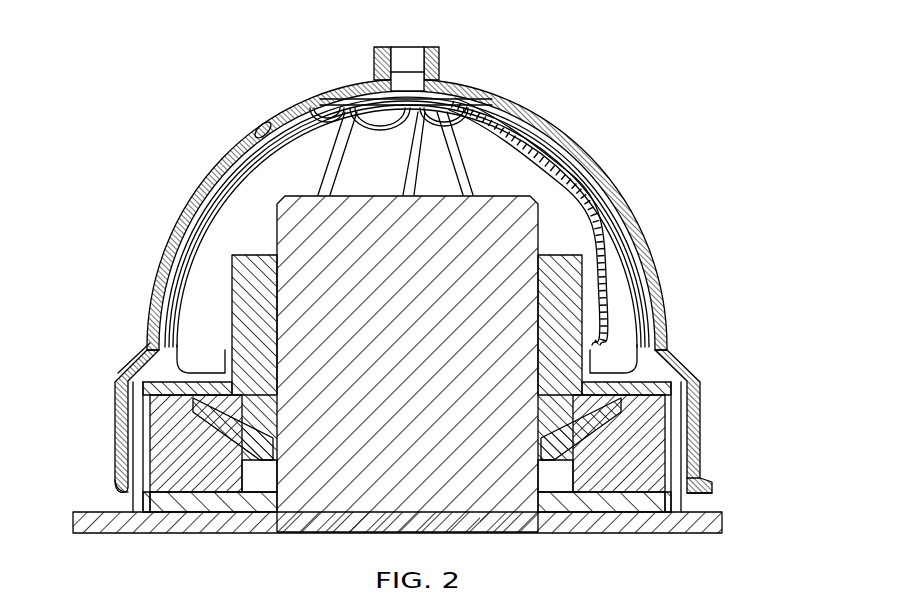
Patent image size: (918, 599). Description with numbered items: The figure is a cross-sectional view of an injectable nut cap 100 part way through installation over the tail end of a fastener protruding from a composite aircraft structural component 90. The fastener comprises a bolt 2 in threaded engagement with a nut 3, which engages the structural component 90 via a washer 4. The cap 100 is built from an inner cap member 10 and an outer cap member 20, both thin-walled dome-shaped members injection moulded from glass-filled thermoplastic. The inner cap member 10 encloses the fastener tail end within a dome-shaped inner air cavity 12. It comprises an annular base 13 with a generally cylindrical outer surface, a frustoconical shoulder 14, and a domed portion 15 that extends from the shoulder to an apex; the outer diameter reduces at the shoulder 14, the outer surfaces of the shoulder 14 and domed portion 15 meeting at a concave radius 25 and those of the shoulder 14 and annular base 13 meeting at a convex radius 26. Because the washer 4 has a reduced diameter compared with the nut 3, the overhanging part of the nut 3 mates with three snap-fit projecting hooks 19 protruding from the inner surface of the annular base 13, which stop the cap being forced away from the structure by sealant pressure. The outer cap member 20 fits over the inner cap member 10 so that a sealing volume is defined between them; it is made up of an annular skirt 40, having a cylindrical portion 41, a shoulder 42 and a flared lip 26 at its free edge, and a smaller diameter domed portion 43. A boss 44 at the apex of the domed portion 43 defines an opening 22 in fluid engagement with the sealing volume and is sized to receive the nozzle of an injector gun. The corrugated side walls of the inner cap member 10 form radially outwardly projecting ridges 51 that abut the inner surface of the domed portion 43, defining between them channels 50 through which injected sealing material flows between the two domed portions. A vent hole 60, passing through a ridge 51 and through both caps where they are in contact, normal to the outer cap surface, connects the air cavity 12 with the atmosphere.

The bolt 2 is at (509, 318).
The nut 3 is at (567, 330).
The washer 4 is at (676, 470).
The inner cap member 10 is at (640, 238).
The inner air cavity 12 is at (383, 176).
The annular base 13 is at (682, 420).
The frustoconical shoulder 14 is at (665, 343).
The domed portion 15 is at (600, 186).
The snap-fit projecting hooks 19 is at (130, 513).
The outer cap member 20 is at (654, 198).
The opening 22 is at (402, 87).
The concave radius 25 is at (152, 343).
The convex radius 26 is at (110, 488).
The annular skirt 40 is at (92, 423).
The cylindrical portion 41 is at (115, 400).
The shoulder 42 is at (133, 356).
The domed portion 43 is at (196, 151).
The boss 44 is at (441, 62).
The channels 50 is at (590, 148).
The ridges 51 is at (233, 150).
The vent hole 60 is at (262, 124).
The composite aircraft structural component 90 is at (700, 512).
The injectable nut cap 100 is at (687, 104).